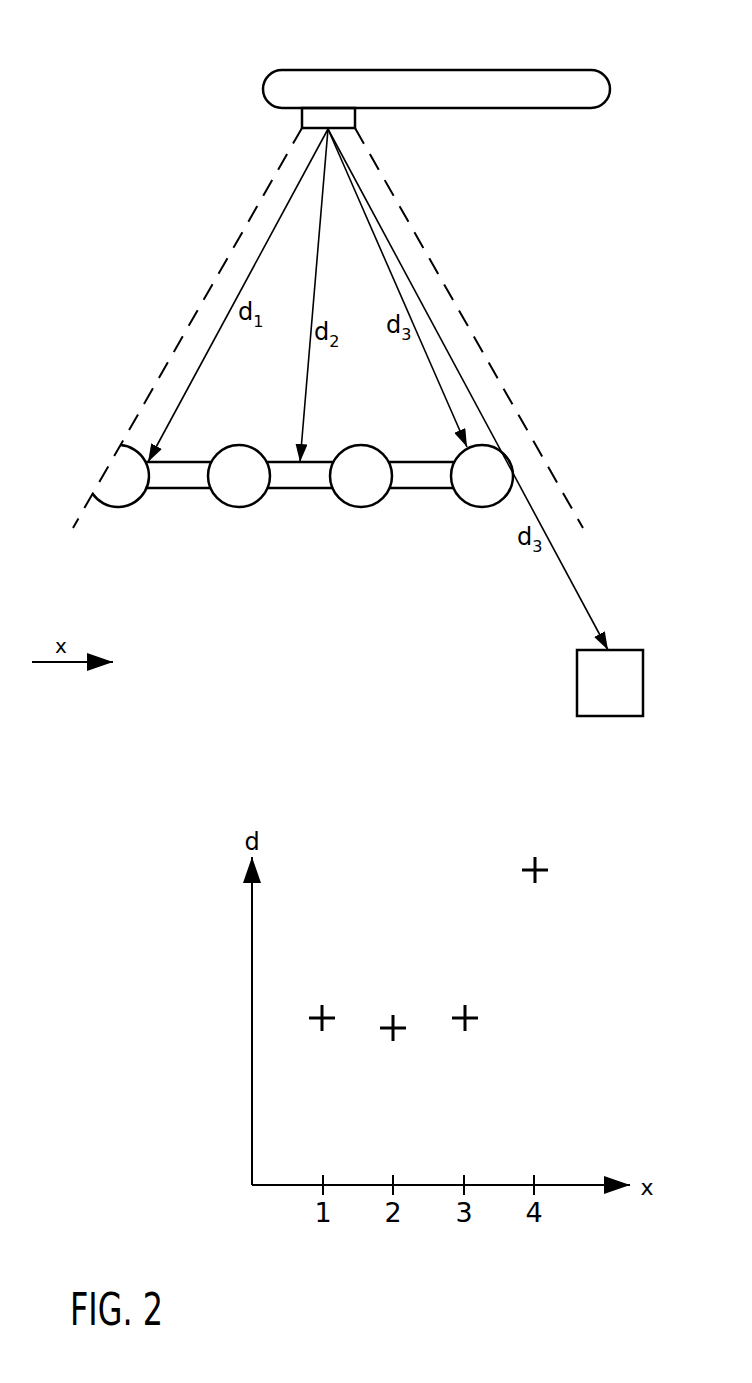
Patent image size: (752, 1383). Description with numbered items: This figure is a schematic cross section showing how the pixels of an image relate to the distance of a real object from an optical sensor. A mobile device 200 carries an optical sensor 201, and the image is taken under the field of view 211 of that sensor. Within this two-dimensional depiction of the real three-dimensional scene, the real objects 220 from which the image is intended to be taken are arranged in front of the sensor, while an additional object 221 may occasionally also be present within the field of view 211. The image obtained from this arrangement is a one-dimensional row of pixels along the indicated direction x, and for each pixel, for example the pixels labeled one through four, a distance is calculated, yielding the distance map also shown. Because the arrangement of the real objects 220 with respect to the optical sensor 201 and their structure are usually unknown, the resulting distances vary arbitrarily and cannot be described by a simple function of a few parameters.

The mobile device 200 is at (578, 69).
The optical sensor 201 is at (306, 118).
The field of view 211 is at (413, 228).
The objects 220 is at (357, 508).
The object 221 is at (643, 672).